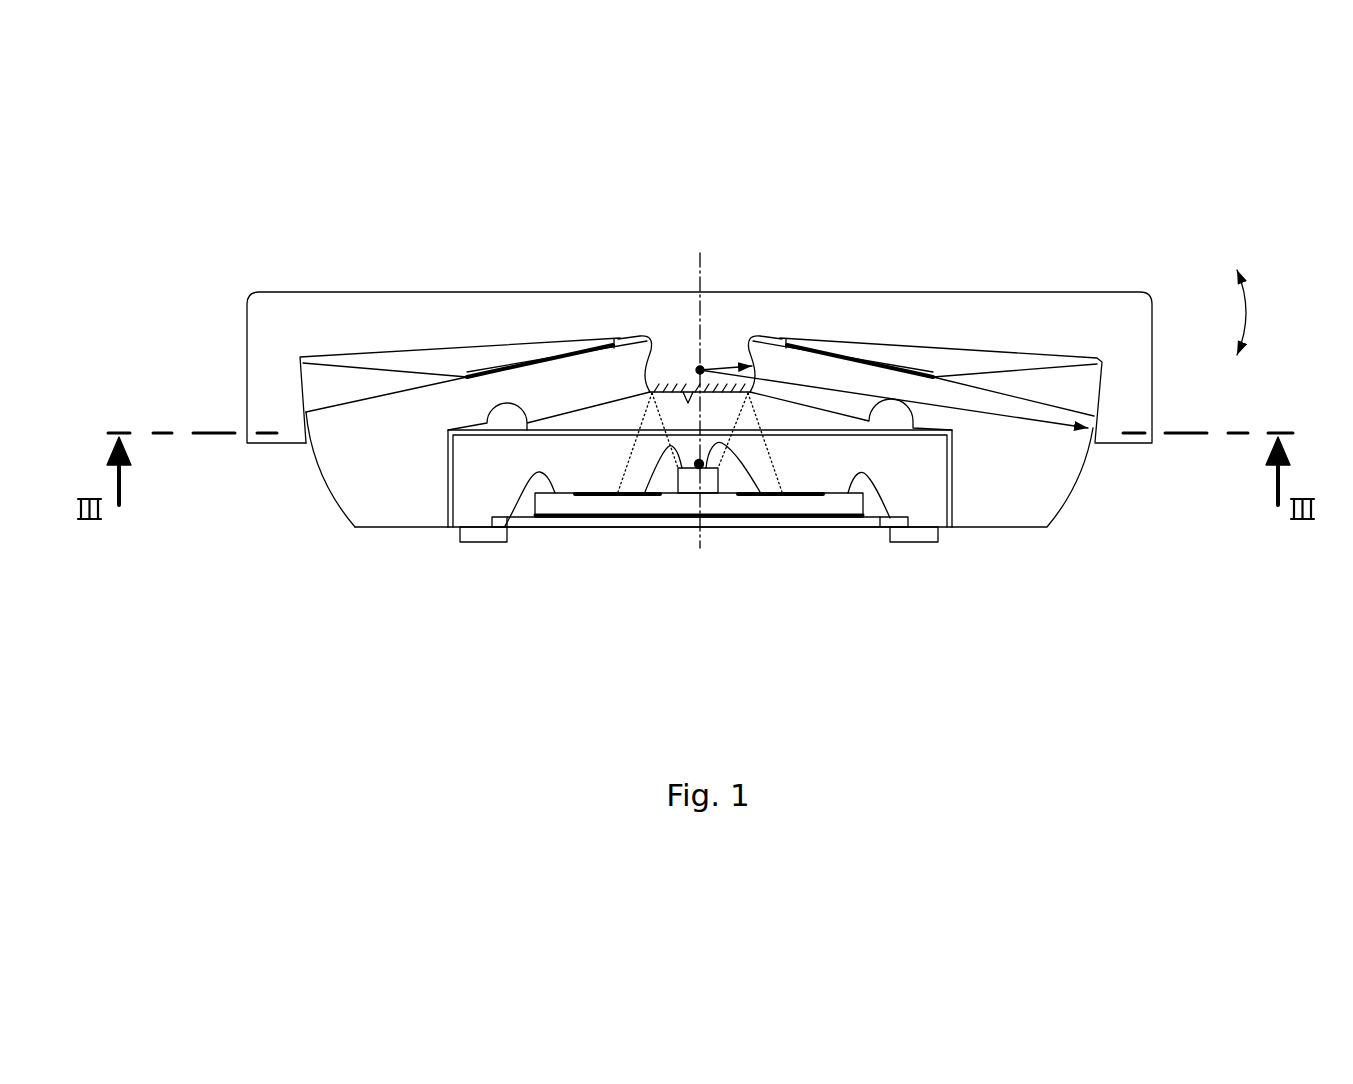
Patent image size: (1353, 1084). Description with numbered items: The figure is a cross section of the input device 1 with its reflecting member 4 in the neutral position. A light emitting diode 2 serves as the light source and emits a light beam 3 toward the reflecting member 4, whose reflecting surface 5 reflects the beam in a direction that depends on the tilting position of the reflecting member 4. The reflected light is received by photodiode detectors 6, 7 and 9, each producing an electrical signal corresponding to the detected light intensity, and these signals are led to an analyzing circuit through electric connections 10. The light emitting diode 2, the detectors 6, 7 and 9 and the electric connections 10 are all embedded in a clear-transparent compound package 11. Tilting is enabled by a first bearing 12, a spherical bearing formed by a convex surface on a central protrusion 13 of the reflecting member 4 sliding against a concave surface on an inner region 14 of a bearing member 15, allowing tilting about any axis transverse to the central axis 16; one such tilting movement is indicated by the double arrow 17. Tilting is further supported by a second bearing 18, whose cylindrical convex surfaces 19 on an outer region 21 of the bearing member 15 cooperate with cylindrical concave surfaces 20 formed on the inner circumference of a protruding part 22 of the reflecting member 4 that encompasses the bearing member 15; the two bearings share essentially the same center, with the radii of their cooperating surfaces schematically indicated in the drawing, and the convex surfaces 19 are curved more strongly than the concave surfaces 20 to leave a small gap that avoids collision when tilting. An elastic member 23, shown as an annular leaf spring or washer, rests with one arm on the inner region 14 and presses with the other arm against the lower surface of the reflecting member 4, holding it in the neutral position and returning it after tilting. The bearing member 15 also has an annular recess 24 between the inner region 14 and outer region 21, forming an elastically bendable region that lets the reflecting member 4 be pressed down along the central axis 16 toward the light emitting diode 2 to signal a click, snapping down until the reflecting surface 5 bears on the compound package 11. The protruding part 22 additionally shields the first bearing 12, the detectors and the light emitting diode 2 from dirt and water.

The input device 1 is at (207, 596).
The light emitting diode 2 is at (697, 484).
The light beam 3 is at (658, 475).
The reflecting member 4 is at (808, 315).
The reflecting surface 5 is at (689, 402).
The detector (photodiode) 6 is at (600, 496).
The detector (photodiode) 7 is at (807, 498).
The detector (photodiode) 9 is at (538, 478).
The electric connections 10 is at (879, 503).
The compound package 11 is at (470, 500).
The first bearing 12 is at (640, 352).
The central protrusion 13 is at (748, 283).
The inner region 14 is at (838, 378).
The bearing member 15 is at (1053, 470).
The central axis 16 is at (679, 370).
The double arrow 17 is at (1262, 312).
The second bearing 18 is at (303, 456).
The convex surfaces 19 is at (323, 492).
The concave surfaces 20 is at (303, 395).
The outer region 21 is at (370, 495).
The protruding part 22 is at (714, 340).
The elastic member 23 is at (1012, 365).
The annular recess 24 is at (505, 410).